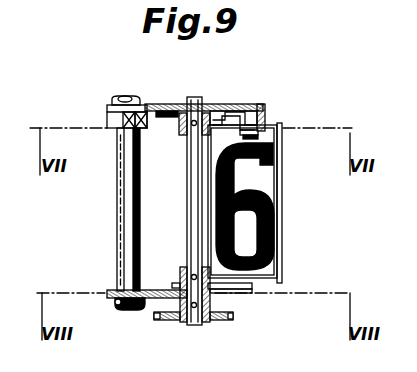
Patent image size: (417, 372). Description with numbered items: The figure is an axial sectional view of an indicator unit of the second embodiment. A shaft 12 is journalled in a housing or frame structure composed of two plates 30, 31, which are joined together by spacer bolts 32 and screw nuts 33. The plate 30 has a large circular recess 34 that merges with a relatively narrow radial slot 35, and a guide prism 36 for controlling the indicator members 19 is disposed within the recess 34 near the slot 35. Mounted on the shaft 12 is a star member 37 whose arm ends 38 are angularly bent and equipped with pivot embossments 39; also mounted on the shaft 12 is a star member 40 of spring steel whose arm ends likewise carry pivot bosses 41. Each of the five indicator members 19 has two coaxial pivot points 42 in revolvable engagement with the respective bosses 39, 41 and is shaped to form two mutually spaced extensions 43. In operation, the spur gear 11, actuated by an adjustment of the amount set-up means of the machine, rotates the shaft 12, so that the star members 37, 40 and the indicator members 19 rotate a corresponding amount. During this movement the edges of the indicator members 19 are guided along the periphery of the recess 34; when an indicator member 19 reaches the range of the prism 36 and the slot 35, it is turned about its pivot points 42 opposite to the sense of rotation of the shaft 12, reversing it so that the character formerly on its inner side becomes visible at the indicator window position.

The spur gear 11 is at (218, 320).
The shaft 12 is at (196, 207).
The indicator member 19 is at (275, 188).
The plate 30 is at (240, 106).
The plate 31 is at (156, 299).
The spacer bolt 32 is at (128, 205).
The screw nut 33 is at (120, 100).
The circular recess 34 is at (262, 108).
The radial slot 35 is at (110, 130).
The guide prism 36 is at (120, 120).
The star member 37 is at (165, 103).
The arm end 38 is at (250, 133).
The pivot embossment 39 is at (263, 122).
The star member 40 is at (176, 284).
The pivot boss 41 is at (250, 292).
The pivot point 42 is at (248, 140).
The extension 43 is at (213, 122).